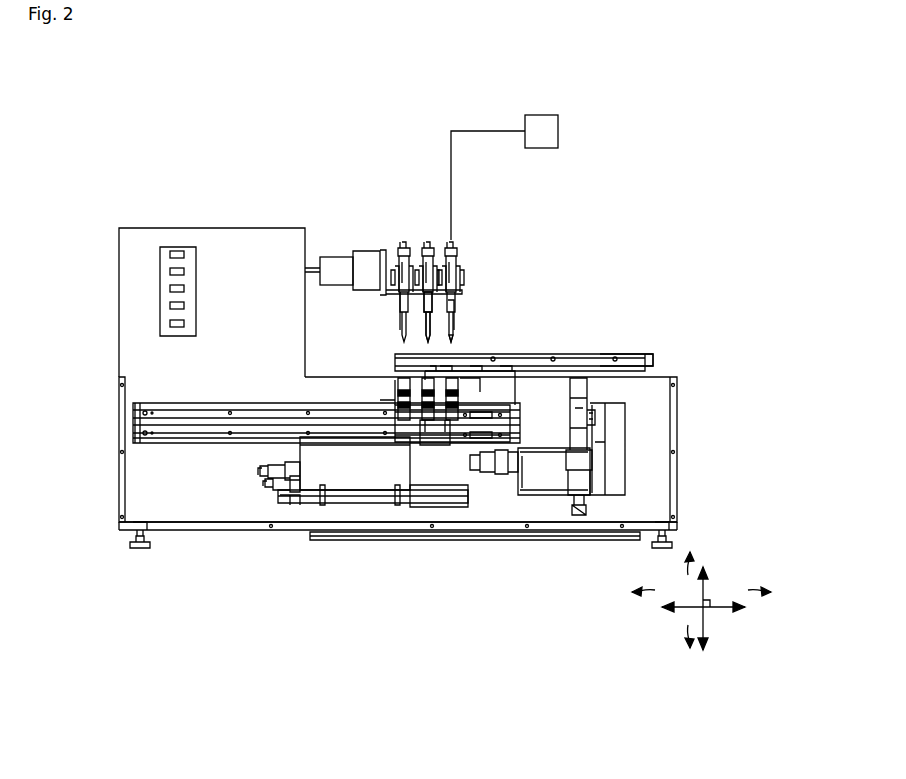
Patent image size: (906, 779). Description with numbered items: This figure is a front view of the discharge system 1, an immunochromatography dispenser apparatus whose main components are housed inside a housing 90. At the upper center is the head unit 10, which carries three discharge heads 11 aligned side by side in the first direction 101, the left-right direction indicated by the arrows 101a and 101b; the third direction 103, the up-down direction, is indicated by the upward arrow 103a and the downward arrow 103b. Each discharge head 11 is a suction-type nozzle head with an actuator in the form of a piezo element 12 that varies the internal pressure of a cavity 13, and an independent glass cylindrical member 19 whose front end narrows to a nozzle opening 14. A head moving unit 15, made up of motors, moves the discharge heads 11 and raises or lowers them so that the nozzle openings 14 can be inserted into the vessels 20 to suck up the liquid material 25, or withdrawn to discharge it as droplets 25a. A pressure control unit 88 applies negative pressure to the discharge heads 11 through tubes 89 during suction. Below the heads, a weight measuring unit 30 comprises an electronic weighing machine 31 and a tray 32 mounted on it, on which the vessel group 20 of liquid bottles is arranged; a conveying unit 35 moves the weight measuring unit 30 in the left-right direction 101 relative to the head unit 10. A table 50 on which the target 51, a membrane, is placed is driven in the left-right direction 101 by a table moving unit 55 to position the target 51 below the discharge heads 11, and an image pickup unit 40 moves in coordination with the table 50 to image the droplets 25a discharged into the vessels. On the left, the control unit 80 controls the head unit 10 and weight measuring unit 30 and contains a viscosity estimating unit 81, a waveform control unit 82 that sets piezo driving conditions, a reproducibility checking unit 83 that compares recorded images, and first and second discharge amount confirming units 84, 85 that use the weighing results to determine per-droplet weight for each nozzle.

The discharge system 1 is at (605, 178).
The head unit 10 is at (383, 237).
The discharge head 11 is at (455, 245).
The actuator 12 is at (458, 272).
The cavity 13 is at (470, 282).
The nozzle opening 14 is at (457, 335).
The head moving unit 15 is at (350, 258).
The cylindrical member 19 is at (400, 318).
The vessel group 20 is at (395, 432).
The liquid material 25 is at (458, 297).
The droplet 25a is at (452, 348).
The weight measuring unit 30 is at (262, 490).
The electronic weighing machine 31 is at (362, 465).
The tray 32 is at (395, 402).
The conveying unit 35 is at (327, 533).
The image pickup unit 40 is at (590, 400).
The table 50 is at (652, 354).
The target 51 is at (615, 356).
The table moving unit 55 is at (507, 397).
The control unit 80 is at (185, 245).
The viscosity estimating unit 81 is at (170, 255).
The waveform control unit 82 is at (170, 272).
The reproducibility checking unit 83 is at (170, 289).
The first discharge amount confirming unit 84 is at (170, 306).
The second discharge amount confirming unit 85 is at (170, 324).
The pressure control unit 88 is at (543, 125).
The tube 89 is at (476, 131).
The housing 90 is at (125, 420).
The first direction 101 is at (715, 612).
The left direction 101a is at (645, 592).
The right direction 101b is at (760, 592).
The third direction 103 is at (705, 590).
The upward direction 103a is at (700, 565).
The downward direction 103b is at (685, 632).